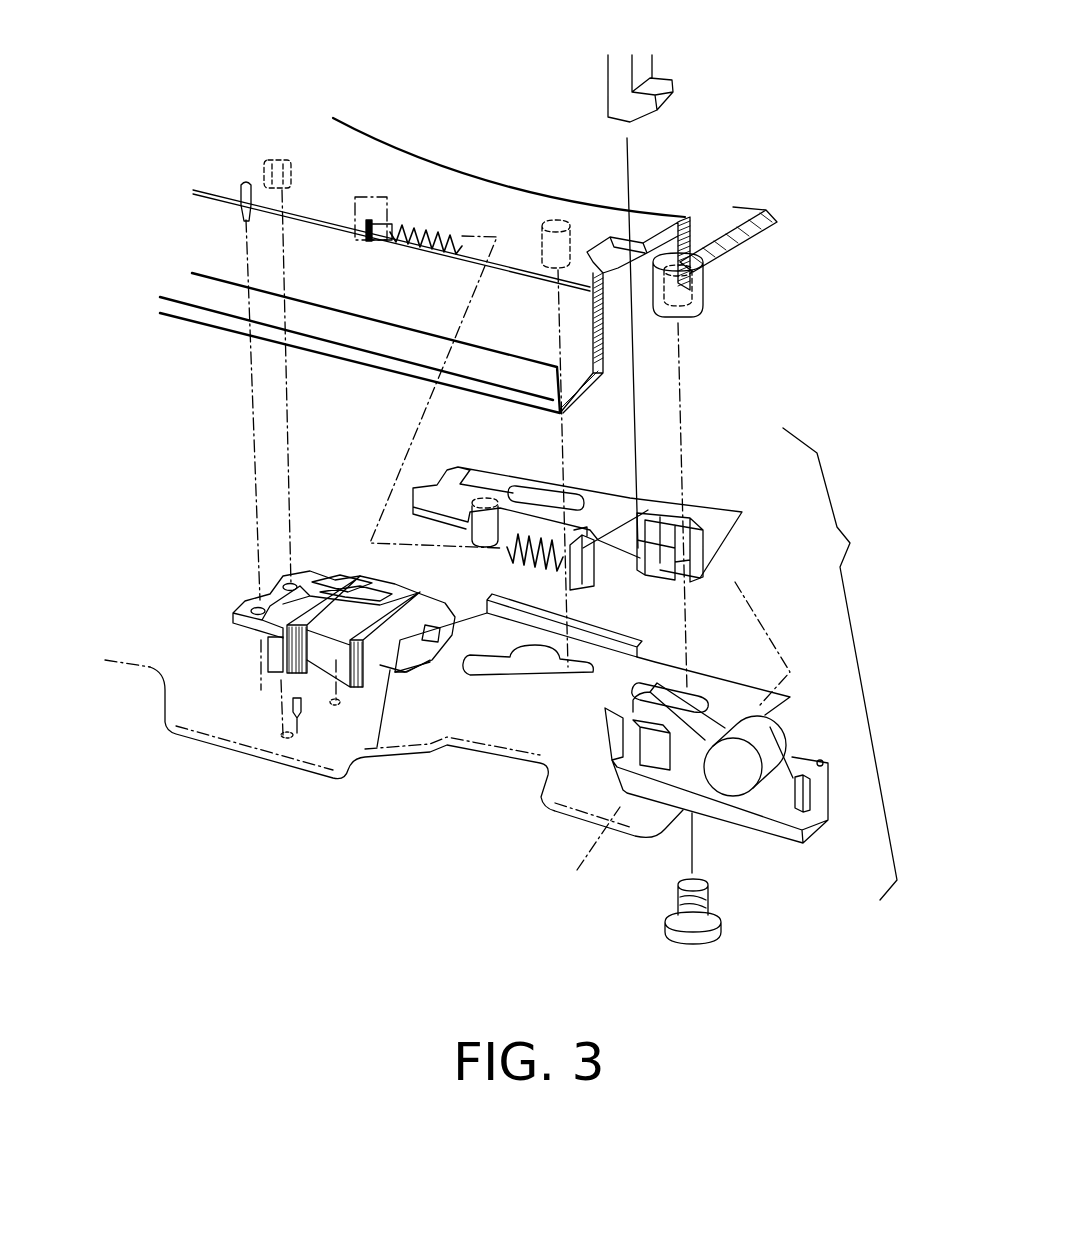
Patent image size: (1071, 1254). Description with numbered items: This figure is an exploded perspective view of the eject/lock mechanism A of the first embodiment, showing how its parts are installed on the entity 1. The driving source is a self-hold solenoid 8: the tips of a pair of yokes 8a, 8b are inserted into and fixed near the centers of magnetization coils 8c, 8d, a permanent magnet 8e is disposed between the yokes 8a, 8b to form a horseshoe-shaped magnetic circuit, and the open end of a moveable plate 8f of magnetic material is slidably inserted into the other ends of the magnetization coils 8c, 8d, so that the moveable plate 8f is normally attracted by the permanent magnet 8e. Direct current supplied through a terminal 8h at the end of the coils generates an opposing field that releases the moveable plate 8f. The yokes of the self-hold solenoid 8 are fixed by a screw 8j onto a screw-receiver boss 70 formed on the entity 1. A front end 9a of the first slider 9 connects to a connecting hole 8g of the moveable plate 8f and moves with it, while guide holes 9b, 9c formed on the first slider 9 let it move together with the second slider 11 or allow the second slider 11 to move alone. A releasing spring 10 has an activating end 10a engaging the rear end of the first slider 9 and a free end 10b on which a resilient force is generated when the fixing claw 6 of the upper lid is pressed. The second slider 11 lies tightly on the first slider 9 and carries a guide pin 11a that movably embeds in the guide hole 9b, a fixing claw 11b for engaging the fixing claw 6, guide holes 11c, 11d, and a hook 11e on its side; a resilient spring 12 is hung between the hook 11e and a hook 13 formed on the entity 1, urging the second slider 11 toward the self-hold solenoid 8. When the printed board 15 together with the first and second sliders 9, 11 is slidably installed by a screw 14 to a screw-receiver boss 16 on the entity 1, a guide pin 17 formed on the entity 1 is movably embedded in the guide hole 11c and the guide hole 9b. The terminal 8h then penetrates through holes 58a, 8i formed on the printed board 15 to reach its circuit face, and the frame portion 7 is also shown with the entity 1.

The entity 1 is at (420, 137).
The fixing claw 6 is at (673, 90).
The bracket 7 is at (607, 238).
The screw-receiver boss 70 is at (262, 158).
The hook 13 is at (358, 208).
The resilient spring 12 is at (435, 255).
The guide pin 17 is at (540, 258).
The screw-receiver boss 16 is at (703, 290).
The second slider 11 is at (563, 556).
The guide pin 11a is at (473, 525).
The fixing claw 11b is at (636, 548).
The guide hole 11c is at (528, 487).
The guide hole 11d is at (730, 528).
The hook 11e is at (595, 566).
The eject/lock mechanism A is at (880, 565).
The first slider 9 is at (471, 736).
The front end 9a is at (450, 632).
The guide hole 9b is at (517, 680).
The guide hole 9c is at (697, 696).
The printed board 15 is at (585, 856).
The releasing spring 10 is at (714, 782).
The activating end 10a is at (832, 793).
The free end 10b is at (610, 716).
The screw 14 is at (723, 930).
The self-hold solenoid 8 is at (299, 714).
The yoke 8a is at (322, 568).
The yoke 8b is at (250, 610).
The magnetization coil 8c is at (380, 598).
The magnetization coil 8d is at (335, 706).
The permanent magnet 8e is at (283, 587).
The moveable plate 8f is at (408, 683).
The connecting hole 8g is at (325, 672).
The terminal 8h is at (273, 670).
The through hole 8i is at (377, 747).
The screw 8j is at (300, 727).
The through hole 58a is at (283, 737).